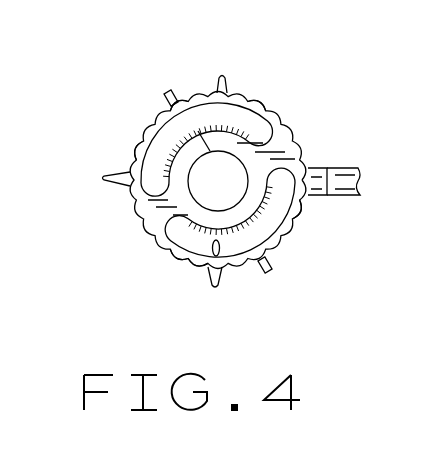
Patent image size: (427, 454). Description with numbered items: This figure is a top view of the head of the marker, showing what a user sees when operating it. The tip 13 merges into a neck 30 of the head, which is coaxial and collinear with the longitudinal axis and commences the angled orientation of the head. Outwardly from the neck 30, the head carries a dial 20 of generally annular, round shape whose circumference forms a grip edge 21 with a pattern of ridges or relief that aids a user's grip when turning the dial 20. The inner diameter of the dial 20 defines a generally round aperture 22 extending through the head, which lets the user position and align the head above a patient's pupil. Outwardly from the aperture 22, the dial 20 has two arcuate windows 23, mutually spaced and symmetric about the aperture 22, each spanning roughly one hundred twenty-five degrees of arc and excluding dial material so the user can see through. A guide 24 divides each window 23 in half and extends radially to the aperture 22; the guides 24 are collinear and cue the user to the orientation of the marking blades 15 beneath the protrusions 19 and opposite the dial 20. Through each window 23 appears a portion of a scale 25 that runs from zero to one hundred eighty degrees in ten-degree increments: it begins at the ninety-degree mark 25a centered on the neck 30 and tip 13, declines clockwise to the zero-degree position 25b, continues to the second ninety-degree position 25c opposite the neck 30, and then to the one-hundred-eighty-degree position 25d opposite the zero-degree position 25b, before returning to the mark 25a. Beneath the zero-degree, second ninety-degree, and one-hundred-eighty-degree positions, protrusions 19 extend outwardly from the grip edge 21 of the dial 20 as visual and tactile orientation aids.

The tip 13 is at (350, 167).
The marking blades 15 is at (167, 92).
The protrusions 19 is at (220, 77).
The dial 20 is at (152, 221).
The grip edge 21 is at (130, 212).
The aperture 22 is at (235, 173).
The arcuate windows 23 is at (270, 124).
The guide 24 is at (204, 127).
The scale 25 is at (163, 103).
The 90° mark 25a is at (302, 202).
The 0° position 25b is at (205, 266).
The second 90° position 25c is at (143, 158).
The 180° position 25d is at (245, 98).
The neck 30 is at (313, 167).